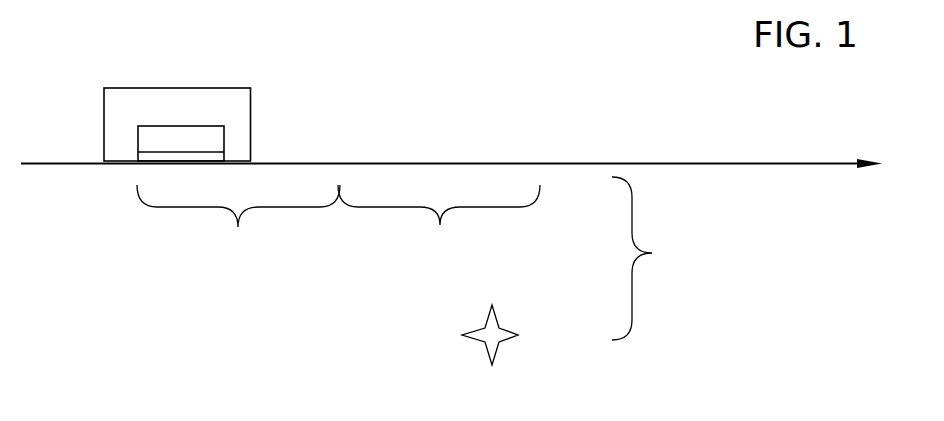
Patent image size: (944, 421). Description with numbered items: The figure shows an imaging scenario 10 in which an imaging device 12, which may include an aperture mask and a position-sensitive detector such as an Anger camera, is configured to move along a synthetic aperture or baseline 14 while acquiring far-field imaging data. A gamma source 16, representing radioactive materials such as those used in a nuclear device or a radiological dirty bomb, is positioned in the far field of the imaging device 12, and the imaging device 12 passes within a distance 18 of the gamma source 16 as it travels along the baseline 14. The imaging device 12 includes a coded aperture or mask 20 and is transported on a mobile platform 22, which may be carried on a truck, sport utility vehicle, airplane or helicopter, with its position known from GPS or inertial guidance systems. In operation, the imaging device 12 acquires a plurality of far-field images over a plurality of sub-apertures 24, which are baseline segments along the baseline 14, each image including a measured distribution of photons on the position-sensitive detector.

The imaging scenario 10 is at (566, 63).
The imaging device 12 is at (203, 126).
The synthetic aperture or baseline 14 is at (742, 163).
The gamma source 16 is at (485, 328).
The distance 18 is at (650, 258).
The coded aperture or mask 20 is at (145, 155).
The mobile platform 22 is at (242, 119).
The sub-apertures 24 is at (338, 223).